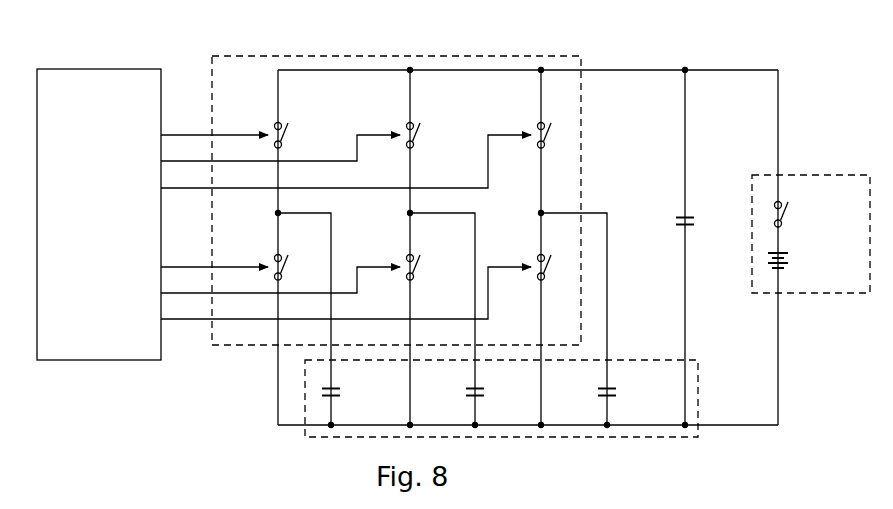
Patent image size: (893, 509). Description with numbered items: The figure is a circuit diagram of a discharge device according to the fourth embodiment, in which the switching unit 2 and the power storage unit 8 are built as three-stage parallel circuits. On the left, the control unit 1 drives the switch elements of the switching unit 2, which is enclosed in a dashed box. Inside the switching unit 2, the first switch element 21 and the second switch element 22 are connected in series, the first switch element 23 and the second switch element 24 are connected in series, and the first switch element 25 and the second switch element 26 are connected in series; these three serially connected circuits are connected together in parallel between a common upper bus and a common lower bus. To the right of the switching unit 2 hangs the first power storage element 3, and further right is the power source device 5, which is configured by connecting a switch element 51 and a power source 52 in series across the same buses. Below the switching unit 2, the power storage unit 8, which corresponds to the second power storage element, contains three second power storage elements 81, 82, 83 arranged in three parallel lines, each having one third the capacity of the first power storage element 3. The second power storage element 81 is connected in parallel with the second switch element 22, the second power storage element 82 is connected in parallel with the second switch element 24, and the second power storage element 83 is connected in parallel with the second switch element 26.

The control unit 1 is at (63, 69).
The switching unit 2 is at (243, 56).
The first switch element 21 is at (275, 122).
The second switch element 22 is at (275, 254).
The first switch element 23 is at (407, 122).
The second switch element 24 is at (407, 254).
The first switch element 25 is at (538, 122).
The second switch element 26 is at (538, 254).
The first power storage element 3 is at (689, 213).
The power source device 5 is at (835, 175).
The switch element 51 is at (787, 214).
The power source 52 is at (788, 264).
The power storage unit 8 is at (691, 359).
The second power storage element 81 is at (339, 395).
The second power storage element 82 is at (482, 395).
The second power storage element 83 is at (614, 395).